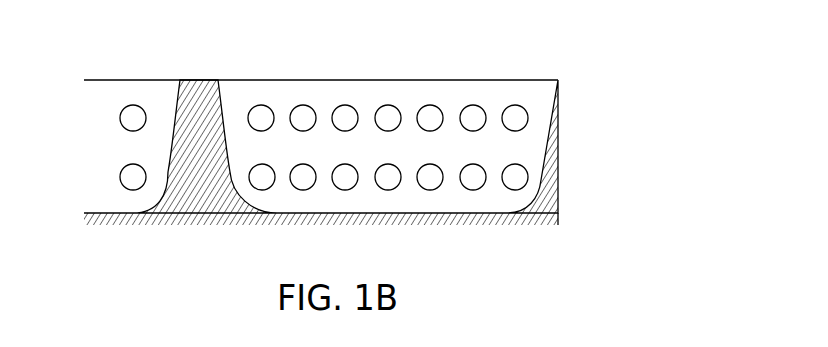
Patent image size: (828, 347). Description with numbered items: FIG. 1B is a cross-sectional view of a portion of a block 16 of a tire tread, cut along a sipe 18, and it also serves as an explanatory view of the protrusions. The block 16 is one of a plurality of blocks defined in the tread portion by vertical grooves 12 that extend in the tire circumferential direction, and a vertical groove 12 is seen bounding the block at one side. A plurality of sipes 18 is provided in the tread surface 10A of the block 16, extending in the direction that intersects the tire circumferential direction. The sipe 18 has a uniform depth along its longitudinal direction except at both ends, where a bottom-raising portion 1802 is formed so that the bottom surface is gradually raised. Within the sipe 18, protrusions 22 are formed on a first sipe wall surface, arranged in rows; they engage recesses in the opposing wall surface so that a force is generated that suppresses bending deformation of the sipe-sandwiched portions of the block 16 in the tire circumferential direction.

The tread surface 10A is at (309, 80).
The vertical groove 12 is at (548, 148).
The block 16 is at (200, 80).
The sipe 18 is at (124, 93).
The protrusion 22 is at (345, 112).
The bottom-raising portion 1802 is at (245, 192).